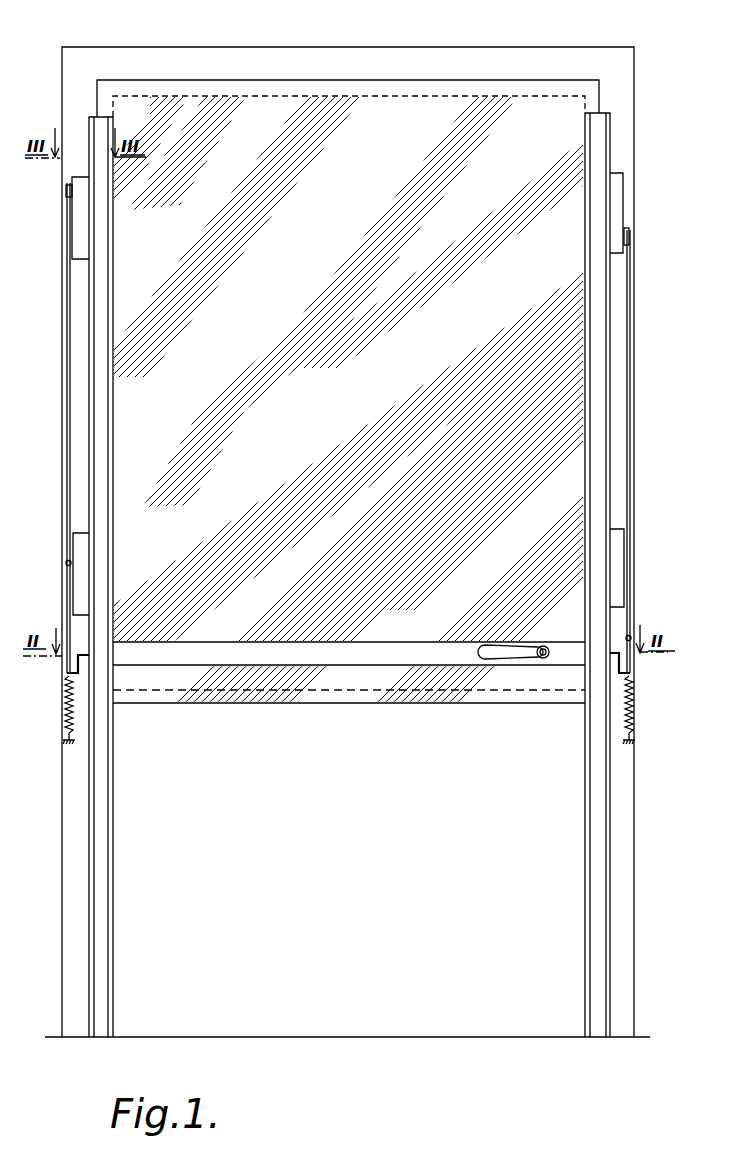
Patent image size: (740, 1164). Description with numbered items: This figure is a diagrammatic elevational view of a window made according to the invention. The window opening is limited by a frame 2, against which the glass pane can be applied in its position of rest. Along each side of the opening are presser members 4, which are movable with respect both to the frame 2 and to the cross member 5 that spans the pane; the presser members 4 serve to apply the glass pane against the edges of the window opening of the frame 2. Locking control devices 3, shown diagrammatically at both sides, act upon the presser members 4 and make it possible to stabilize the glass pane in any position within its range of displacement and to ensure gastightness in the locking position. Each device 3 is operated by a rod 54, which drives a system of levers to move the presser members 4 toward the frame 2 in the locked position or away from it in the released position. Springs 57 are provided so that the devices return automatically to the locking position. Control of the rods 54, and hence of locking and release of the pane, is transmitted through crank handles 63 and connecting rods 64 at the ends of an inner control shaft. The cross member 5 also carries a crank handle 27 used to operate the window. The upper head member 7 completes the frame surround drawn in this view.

The frame 2 is at (70, 81).
The head frame member 7 is at (358, 56).
The locking control device 3 is at (82, 201).
The presser member 4 is at (100, 292).
The rod 54 is at (68, 393).
The connecting rod 64 is at (68, 601).
The crank handle 63 is at (80, 665).
The spring 57 is at (67, 711).
The cross member 5 is at (212, 649).
The crank handle 27 is at (527, 651).